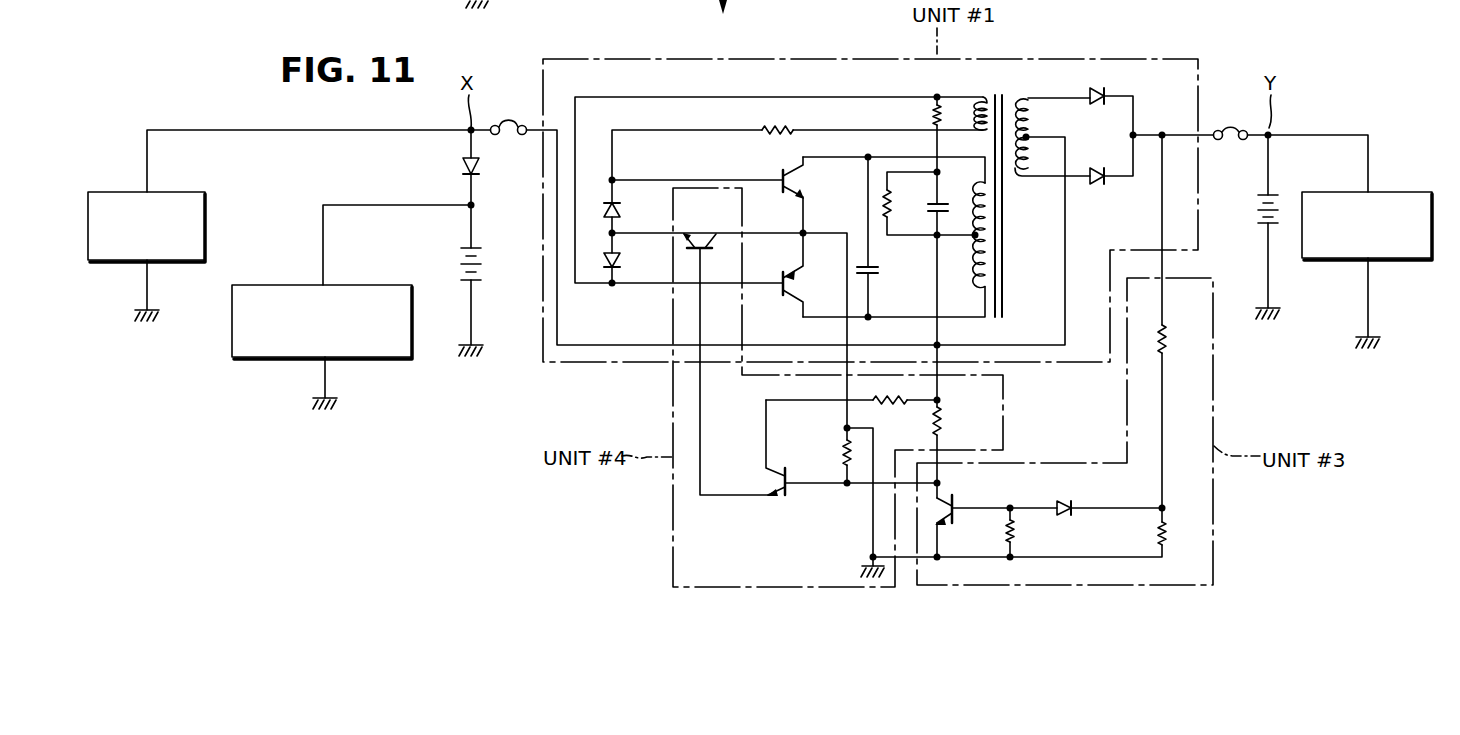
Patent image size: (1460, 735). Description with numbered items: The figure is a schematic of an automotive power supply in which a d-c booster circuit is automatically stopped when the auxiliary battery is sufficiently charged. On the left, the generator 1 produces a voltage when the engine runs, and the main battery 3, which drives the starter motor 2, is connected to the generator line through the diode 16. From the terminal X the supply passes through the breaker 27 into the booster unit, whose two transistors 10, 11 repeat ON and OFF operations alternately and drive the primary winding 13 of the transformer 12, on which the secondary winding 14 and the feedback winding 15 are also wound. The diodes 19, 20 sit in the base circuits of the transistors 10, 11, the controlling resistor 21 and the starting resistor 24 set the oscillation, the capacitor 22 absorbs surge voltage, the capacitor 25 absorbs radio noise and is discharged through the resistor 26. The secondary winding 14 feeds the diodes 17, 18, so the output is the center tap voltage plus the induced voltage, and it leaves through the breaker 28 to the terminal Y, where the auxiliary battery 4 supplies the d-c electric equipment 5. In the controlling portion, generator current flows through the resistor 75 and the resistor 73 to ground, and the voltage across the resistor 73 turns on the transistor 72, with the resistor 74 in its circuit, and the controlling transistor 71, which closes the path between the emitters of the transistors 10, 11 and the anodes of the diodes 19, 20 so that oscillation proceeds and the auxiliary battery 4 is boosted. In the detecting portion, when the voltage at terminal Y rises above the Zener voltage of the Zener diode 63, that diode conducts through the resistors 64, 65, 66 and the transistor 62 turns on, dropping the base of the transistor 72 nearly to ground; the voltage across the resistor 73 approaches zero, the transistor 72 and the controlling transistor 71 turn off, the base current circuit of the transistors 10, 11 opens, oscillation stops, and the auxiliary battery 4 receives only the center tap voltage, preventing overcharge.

The generator 1 is at (112, 192).
The starter motor 2 is at (278, 285).
The main battery 3 is at (458, 268).
The auxiliary battery 4 is at (1255, 212).
The d-c electric equipment 5 is at (1398, 192).
The transistor 10 is at (796, 186).
The transistor 11 is at (796, 278).
The transformer 12 is at (1005, 285).
The primary winding 13 is at (972, 263).
The secondary winding 14 is at (1028, 97).
The feedback winding 15 is at (972, 101).
The diode 16 is at (461, 168).
The diode 17 is at (1098, 104).
The diode 18 is at (1098, 186).
The diode 19 is at (627, 207).
The diode 20 is at (624, 258).
The controlling resistor 21 is at (799, 128).
The capacitor 22 is at (878, 269).
The starting resistor 24 is at (930, 111).
The capacitor 25 is at (946, 206).
The resistor 26 is at (891, 203).
The breaker 27 is at (505, 118).
The breaker 28 is at (1234, 118).
The second semiconductor switching element 62 is at (940, 505).
The second Zener diode 63 is at (1064, 504).
The resistor 64 is at (1018, 535).
The resistor 65 is at (1165, 350).
The resistor 66 is at (1156, 533).
The controlling transistor 71 is at (700, 242).
The transistor 72 is at (768, 477).
The resistor 73 is at (838, 449).
The resistor 74 is at (890, 404).
The resistor 75 is at (944, 417).